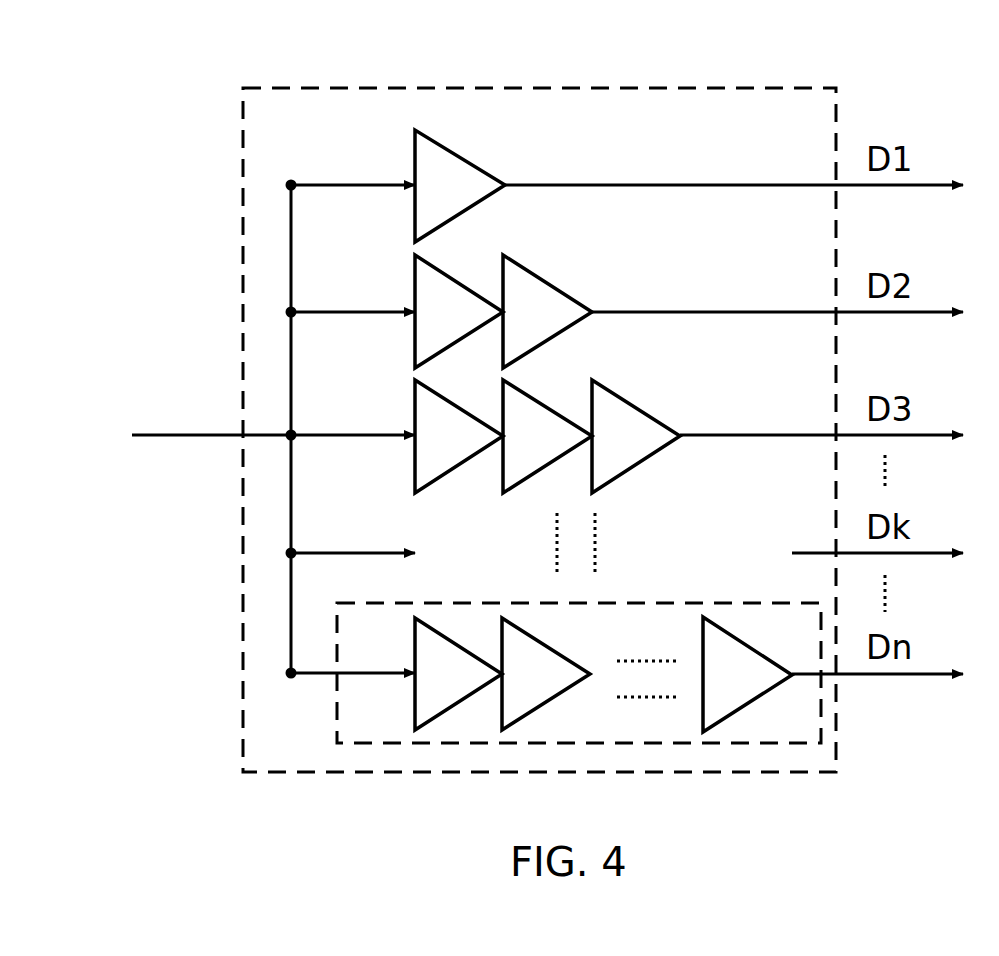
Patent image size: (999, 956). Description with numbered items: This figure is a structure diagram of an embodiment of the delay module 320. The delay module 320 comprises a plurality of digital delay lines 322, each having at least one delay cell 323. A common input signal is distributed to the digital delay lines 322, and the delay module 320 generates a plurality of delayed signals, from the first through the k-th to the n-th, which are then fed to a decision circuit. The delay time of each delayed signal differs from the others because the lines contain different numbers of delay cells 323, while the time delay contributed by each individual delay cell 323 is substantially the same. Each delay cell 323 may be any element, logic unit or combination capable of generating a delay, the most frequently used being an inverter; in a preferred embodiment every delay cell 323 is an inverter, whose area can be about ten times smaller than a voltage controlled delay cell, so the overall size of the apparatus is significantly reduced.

The delay module 320 is at (690, 88).
The digital delay line 322 is at (378, 743).
The delay cell 323 is at (437, 140).